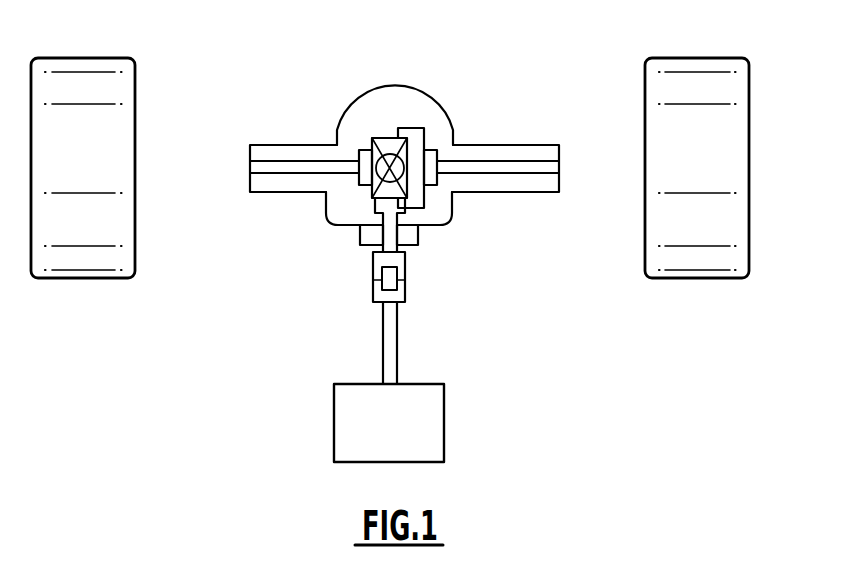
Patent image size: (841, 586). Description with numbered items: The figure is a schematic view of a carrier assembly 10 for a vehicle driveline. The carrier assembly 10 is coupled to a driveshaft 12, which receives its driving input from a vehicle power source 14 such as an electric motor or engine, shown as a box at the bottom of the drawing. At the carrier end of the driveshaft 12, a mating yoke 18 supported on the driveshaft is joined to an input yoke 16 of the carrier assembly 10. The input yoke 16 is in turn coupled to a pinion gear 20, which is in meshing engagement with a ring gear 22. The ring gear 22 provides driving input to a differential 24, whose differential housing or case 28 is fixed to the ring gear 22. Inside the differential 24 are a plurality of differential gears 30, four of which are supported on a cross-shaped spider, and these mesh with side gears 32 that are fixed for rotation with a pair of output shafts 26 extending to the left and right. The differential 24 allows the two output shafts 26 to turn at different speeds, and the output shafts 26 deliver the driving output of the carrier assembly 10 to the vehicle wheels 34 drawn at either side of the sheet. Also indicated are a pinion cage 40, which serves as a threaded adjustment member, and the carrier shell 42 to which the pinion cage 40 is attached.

The carrier assembly 10 is at (500, 68).
The driveshaft 12 is at (397, 344).
The vehicle power source 14 is at (374, 436).
The input yoke 16 is at (405, 259).
The mating yoke 18 is at (405, 289).
The pinion gear 20 is at (372, 207).
The ring gear 22 is at (418, 186).
The differential 24 is at (376, 128).
The output shafts 26 is at (277, 170).
The differential housing or case 28 is at (387, 138).
The differential gears 30 is at (378, 165).
The side gears 32 is at (364, 178).
The vehicle wheels 34 is at (84, 77).
The pinion cage 40 is at (372, 240).
The carrier shell 42 is at (447, 223).